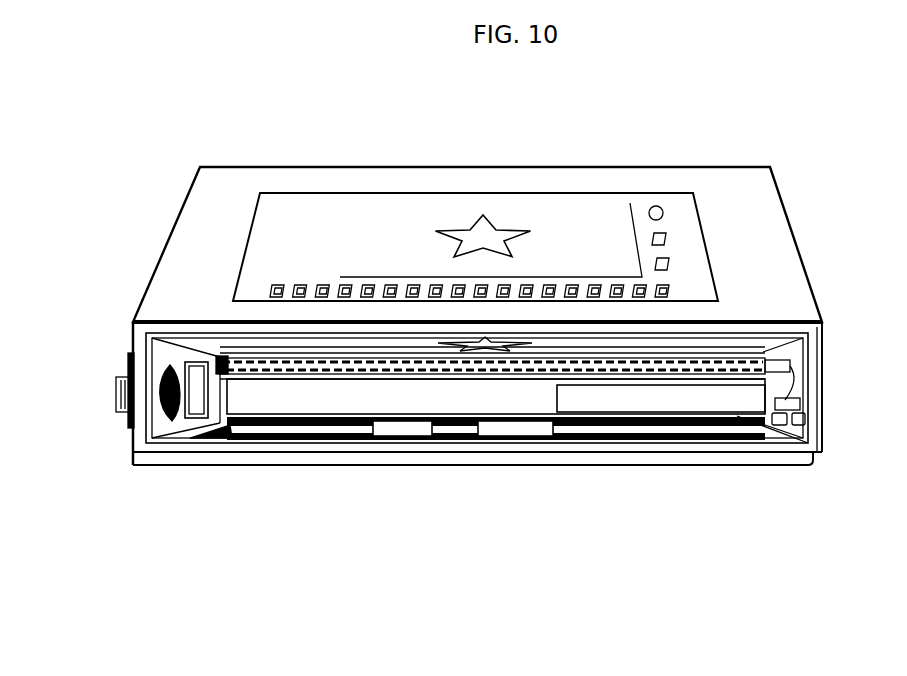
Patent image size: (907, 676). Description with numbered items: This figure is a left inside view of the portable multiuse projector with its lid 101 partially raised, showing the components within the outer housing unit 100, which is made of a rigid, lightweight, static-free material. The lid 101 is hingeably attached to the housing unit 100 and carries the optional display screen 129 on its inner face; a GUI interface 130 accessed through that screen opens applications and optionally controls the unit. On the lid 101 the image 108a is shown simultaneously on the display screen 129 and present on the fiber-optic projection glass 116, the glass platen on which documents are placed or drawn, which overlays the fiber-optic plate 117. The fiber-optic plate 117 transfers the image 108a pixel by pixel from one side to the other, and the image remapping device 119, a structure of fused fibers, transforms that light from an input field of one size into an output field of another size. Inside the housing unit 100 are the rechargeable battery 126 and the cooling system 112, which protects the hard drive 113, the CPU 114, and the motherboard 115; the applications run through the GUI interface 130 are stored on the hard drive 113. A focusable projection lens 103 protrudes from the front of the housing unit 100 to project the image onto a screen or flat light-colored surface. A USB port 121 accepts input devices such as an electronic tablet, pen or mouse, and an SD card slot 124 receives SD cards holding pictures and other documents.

The outer housing unit 100 is at (797, 323).
The lid 101 is at (713, 177).
The projection lens 103 is at (115, 386).
The image 108a is at (470, 343).
The cooling system 112 is at (632, 468).
The hard drive 113 is at (493, 425).
The CPU 114 is at (403, 425).
The motherboard 115 is at (340, 427).
The fiber-optic projection glass 116 is at (733, 343).
The fiber-optic plate 117 is at (218, 357).
The image remapping device 119 is at (182, 367).
The USB port 121 is at (803, 425).
The SD card slot 124 is at (770, 427).
The rechargeable battery 126 is at (697, 405).
The display screen 129 is at (290, 212).
The GUI interface 130 is at (658, 236).